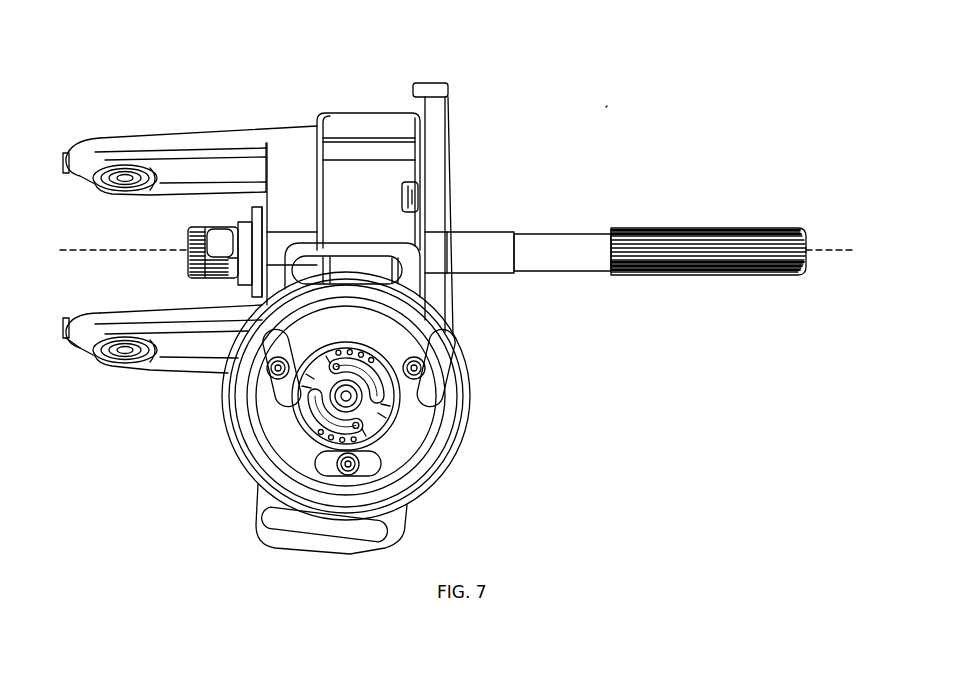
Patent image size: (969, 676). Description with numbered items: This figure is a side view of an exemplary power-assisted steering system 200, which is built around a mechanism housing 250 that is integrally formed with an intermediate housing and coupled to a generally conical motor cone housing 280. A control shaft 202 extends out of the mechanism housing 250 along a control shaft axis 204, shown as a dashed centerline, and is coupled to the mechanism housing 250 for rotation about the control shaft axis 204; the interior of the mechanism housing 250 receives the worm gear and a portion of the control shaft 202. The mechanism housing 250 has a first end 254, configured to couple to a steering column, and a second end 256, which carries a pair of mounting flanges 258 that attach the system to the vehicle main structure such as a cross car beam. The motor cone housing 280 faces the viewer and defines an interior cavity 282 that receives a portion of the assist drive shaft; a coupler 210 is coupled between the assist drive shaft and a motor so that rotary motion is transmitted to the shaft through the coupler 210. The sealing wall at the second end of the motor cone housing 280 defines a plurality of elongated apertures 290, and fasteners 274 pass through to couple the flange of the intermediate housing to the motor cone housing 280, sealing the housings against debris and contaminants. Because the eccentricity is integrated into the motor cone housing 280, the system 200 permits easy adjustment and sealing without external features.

The power-assisted steering system 200 is at (614, 104).
The control shaft 202 is at (543, 236).
The control shaft axis 204 is at (826, 243).
The coupler 210 is at (384, 418).
The mechanism housing 250 is at (345, 104).
The first end 254 is at (442, 77).
The second end 256 is at (80, 374).
The mounting flanges 258 is at (168, 130).
The fastener 274 is at (416, 370).
The motor cone housing 280 is at (478, 428).
The interior cavity 282 is at (280, 462).
The elongated apertures 290 is at (262, 410).